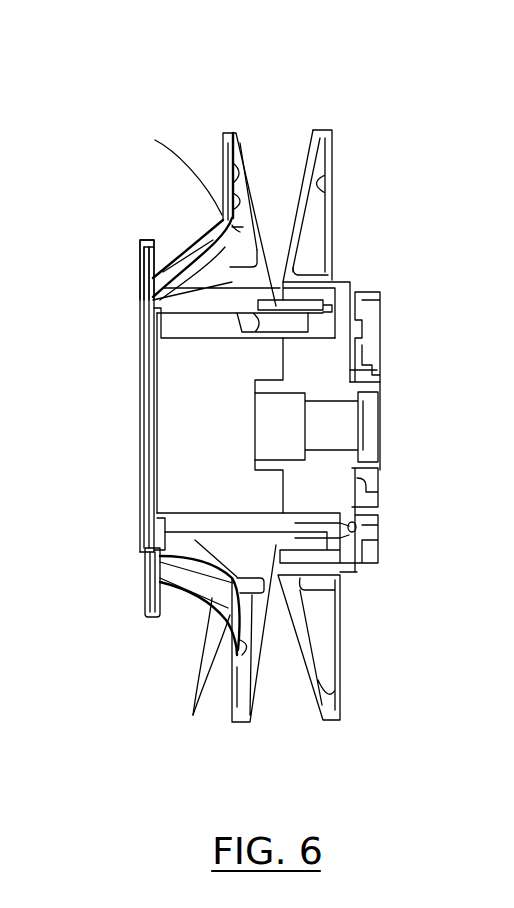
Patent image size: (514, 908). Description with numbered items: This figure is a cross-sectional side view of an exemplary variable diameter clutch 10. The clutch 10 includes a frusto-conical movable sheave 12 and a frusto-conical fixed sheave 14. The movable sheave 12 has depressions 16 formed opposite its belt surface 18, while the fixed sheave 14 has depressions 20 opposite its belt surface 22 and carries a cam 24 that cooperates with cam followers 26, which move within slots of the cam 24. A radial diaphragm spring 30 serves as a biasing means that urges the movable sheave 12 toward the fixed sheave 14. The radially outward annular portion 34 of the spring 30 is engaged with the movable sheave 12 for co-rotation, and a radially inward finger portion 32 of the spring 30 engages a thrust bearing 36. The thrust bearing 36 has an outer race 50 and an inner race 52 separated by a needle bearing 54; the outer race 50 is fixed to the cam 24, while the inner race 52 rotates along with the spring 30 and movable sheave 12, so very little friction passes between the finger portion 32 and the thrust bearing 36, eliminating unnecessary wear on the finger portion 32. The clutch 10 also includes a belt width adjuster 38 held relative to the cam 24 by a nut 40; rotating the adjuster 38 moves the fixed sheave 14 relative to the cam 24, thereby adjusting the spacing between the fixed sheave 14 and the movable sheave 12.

The clutch 10 is at (396, 68).
The movable sheave 12 is at (229, 131).
The fixed sheave 14 is at (319, 134).
The depressions 16 is at (225, 218).
The belt surface 18 is at (250, 143).
The depressions 20 is at (307, 237).
The belt surface 22 is at (307, 143).
The cam 24 is at (323, 325).
The cam followers 26 is at (300, 288).
The radial diaphragm spring 30 is at (177, 268).
The radially inward finger portion 32 is at (155, 567).
The annular portion 34 is at (212, 598).
The thrust bearing 36 is at (146, 243).
The belt width adjuster 38 is at (363, 520).
The nut 40 is at (380, 384).
The outer race 50 is at (137, 300).
The inner race 52 is at (151, 240).
The needle bearing 54 is at (146, 258).